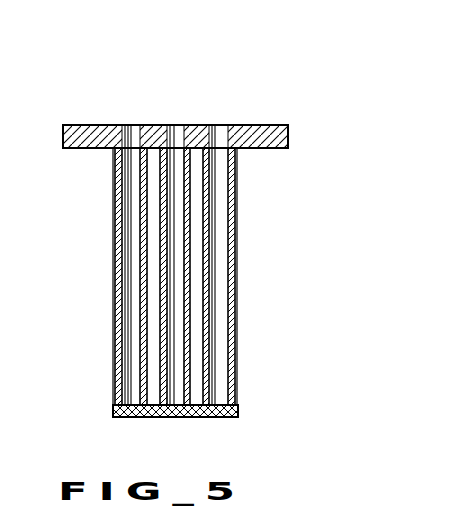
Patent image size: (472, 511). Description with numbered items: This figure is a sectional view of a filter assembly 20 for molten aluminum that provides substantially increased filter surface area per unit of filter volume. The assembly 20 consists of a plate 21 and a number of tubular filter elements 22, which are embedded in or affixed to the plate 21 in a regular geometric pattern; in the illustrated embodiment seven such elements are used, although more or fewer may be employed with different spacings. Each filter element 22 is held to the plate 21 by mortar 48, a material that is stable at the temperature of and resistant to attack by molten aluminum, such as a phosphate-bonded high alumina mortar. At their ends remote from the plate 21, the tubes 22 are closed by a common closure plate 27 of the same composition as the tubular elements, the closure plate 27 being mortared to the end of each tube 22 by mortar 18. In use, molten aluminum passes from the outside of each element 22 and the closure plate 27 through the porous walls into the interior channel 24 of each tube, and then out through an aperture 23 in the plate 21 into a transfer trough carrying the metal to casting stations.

The filter assembly 20 is at (299, 143).
The plate 21 is at (92, 133).
The tubular filter element 22 is at (158, 231).
The aperture 23 is at (222, 137).
The interior channel 24 is at (218, 300).
The mortar 48 is at (173, 150).
The mortar 18 is at (176, 406).
The common closure plate 27 is at (238, 410).